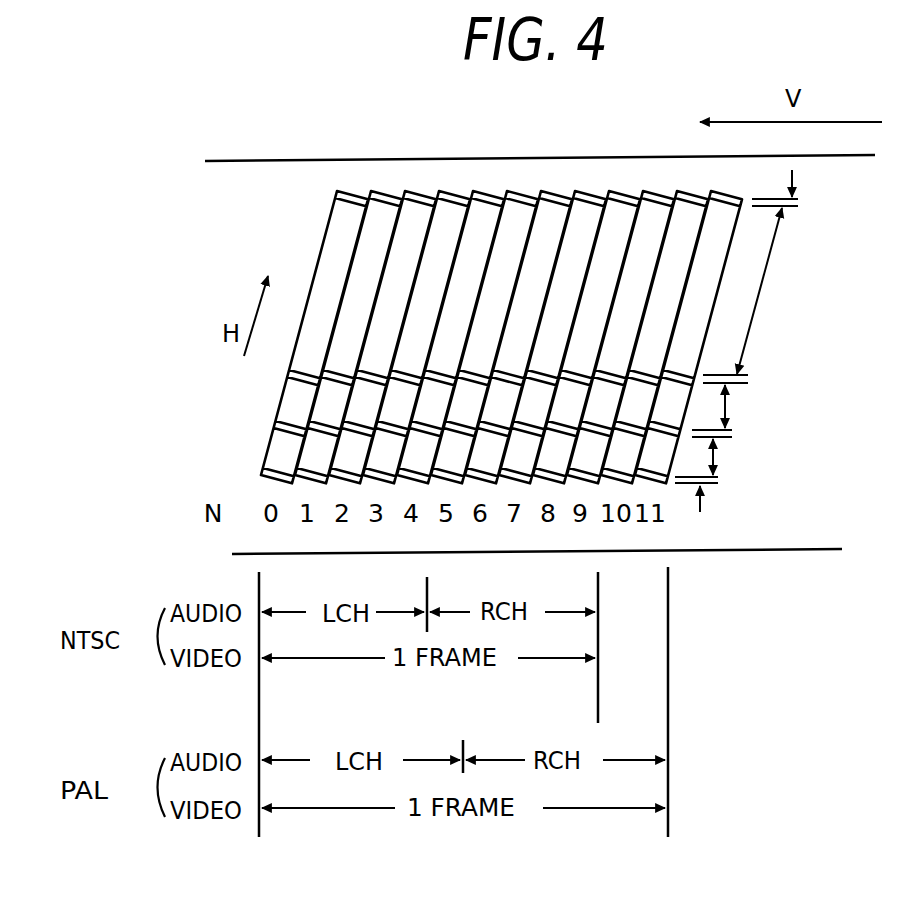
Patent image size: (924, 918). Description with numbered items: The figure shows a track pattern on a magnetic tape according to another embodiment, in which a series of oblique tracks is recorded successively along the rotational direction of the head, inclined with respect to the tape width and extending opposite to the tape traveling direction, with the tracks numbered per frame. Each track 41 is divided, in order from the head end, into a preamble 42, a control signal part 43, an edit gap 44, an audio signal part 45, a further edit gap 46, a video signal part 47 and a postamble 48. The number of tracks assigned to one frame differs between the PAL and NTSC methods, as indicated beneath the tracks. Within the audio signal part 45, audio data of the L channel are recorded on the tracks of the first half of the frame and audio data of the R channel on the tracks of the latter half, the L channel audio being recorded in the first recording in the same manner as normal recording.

The track 41 is at (328, 263).
The preamble 42 is at (720, 478).
The control signal part 43 is at (718, 460).
The edit gap 44 is at (735, 433).
The audio signal part 45 is at (735, 408).
The edit gap 46 is at (750, 378).
The video signal part 47 is at (770, 281).
The postamble 48 is at (800, 203).